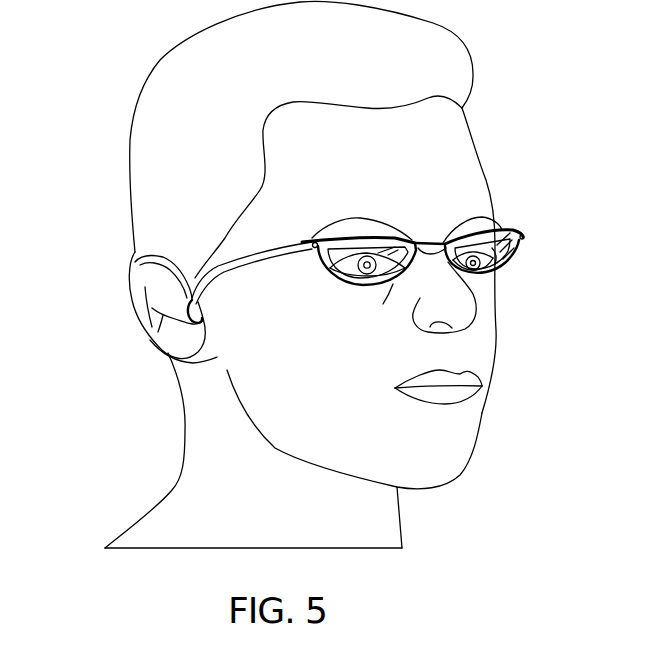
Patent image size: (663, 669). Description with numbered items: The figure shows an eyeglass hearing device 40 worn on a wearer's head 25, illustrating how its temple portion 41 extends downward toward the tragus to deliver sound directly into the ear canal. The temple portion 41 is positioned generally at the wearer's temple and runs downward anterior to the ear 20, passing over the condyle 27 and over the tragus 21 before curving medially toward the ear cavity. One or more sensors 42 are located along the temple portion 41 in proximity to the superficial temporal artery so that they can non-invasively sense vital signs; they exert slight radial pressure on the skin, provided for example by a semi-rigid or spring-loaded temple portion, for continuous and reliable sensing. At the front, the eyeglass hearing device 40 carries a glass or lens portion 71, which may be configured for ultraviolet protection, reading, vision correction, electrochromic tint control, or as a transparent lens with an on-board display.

The ear 20 is at (128, 282).
The tragus 21 is at (186, 309).
The head 25 is at (466, 115).
The condyle 27 is at (196, 326).
The eyeglass hearing device 40 is at (500, 230).
The temple portion 41 is at (263, 260).
The sensors 42 is at (170, 258).
The glass or lens portion 71 is at (500, 270).